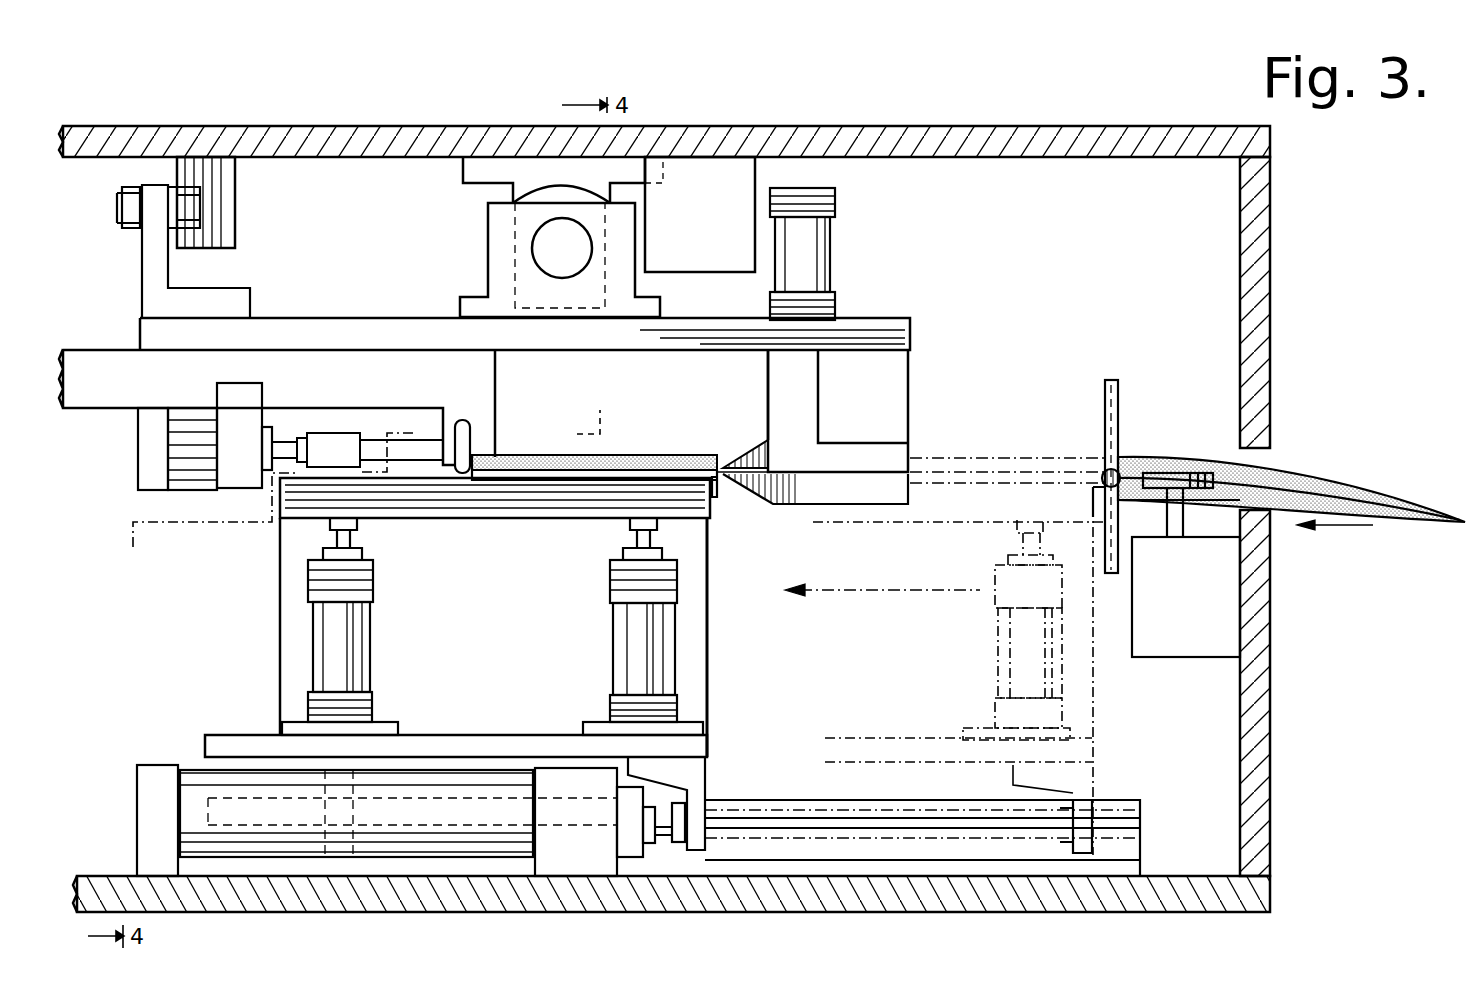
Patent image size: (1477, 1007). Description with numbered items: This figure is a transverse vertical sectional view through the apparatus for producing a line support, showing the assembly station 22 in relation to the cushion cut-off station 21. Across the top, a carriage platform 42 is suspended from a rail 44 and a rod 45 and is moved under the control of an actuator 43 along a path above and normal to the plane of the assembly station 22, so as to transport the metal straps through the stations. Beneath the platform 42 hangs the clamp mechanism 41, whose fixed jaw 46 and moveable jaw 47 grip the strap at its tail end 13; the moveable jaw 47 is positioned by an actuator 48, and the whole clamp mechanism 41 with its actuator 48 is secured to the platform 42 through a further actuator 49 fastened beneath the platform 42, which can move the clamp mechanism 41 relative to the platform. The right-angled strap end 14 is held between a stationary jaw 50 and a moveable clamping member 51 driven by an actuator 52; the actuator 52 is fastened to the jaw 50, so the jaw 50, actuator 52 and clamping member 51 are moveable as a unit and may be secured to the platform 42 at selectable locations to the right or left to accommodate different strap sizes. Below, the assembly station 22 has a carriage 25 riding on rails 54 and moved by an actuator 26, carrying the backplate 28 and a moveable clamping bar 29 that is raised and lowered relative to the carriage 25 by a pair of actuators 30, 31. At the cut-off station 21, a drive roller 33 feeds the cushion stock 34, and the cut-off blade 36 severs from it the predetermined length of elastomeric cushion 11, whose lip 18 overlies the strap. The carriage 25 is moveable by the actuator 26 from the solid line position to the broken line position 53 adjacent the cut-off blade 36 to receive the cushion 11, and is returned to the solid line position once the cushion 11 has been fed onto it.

The elastomeric cushion 11 is at (642, 455).
The strap end 13 is at (742, 476).
The strap end 14 is at (474, 447).
The cushion lip 18 is at (685, 463).
The cushion cut-off station 21 is at (1188, 359).
The assembly station 22 is at (258, 640).
The carriage 25 is at (442, 740).
The actuator 26 is at (193, 797).
The backplate 28 is at (697, 657).
The clamping bar 29 is at (498, 508).
The actuator 30 is at (352, 635).
The actuator 31 is at (635, 640).
The drive roller 33 is at (1150, 480).
The cushion stock 34 is at (1392, 473).
The cut-off blade 36 is at (1105, 385).
The clamp mechanism 41 is at (925, 458).
The carriage platform 42 is at (890, 318).
The actuator 43 is at (756, 170).
The rail 44 is at (237, 208).
The rod 45 is at (540, 250).
The fixed jaw 46 is at (753, 453).
The moveable jaw 47 is at (757, 505).
The actuator 48 is at (818, 257).
The actuator 49 is at (905, 373).
The stationary jaw 50 is at (485, 363).
The moveable clamping member 51 is at (422, 462).
The actuator 52 is at (188, 477).
The broken line position 53 is at (1093, 693).
The rails 54 is at (1143, 812).